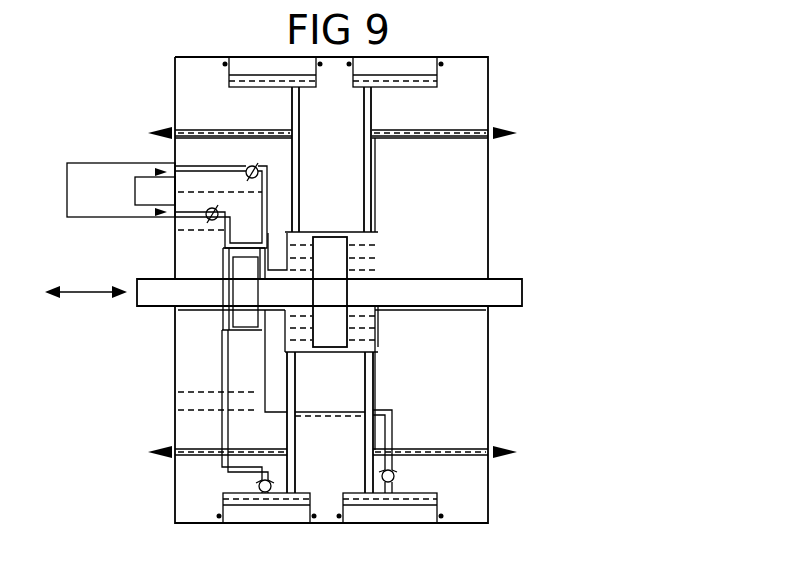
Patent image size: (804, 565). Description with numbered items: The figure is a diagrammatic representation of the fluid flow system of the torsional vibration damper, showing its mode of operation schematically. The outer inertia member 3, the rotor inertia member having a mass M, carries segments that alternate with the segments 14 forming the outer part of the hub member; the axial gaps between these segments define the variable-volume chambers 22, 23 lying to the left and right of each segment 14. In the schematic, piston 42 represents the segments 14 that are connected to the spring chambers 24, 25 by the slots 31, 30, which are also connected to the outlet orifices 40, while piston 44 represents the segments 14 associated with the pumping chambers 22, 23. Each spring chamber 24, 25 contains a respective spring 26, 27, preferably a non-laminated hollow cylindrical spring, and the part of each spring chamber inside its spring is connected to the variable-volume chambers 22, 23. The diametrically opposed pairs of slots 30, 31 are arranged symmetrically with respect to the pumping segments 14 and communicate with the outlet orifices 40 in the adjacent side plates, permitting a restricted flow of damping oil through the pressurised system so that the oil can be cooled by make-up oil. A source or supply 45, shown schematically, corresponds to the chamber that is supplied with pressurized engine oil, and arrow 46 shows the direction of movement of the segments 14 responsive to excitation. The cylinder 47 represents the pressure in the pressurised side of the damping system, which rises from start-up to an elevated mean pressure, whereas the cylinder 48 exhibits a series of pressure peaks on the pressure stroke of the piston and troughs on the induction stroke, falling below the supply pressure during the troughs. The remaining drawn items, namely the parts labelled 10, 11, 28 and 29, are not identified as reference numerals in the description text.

The outer inertia member 3 is at (476, 176).
The valve 10 is at (187, 217).
The supply conduit 11 is at (203, 170).
The segments 14 is at (238, 310).
The variable-volume chamber 22 is at (225, 267).
The variable-volume chamber 23 is at (220, 350).
The spring chamber 24 is at (229, 80).
The spring chamber 25 is at (432, 80).
The spring 26 is at (252, 63).
The spring 27 is at (414, 63).
The return conduit 28 is at (222, 470).
The return conduit 29 is at (390, 410).
The slot 30 is at (372, 108).
The slot 31 is at (293, 108).
The outlet orifice 40 is at (175, 128).
The piston 42 is at (377, 325).
The piston 44 is at (220, 325).
The source or supply 45 is at (75, 163).
The arrow 46 is at (78, 283).
The cylinder 47 is at (398, 338).
The cylinder 48 is at (245, 340).